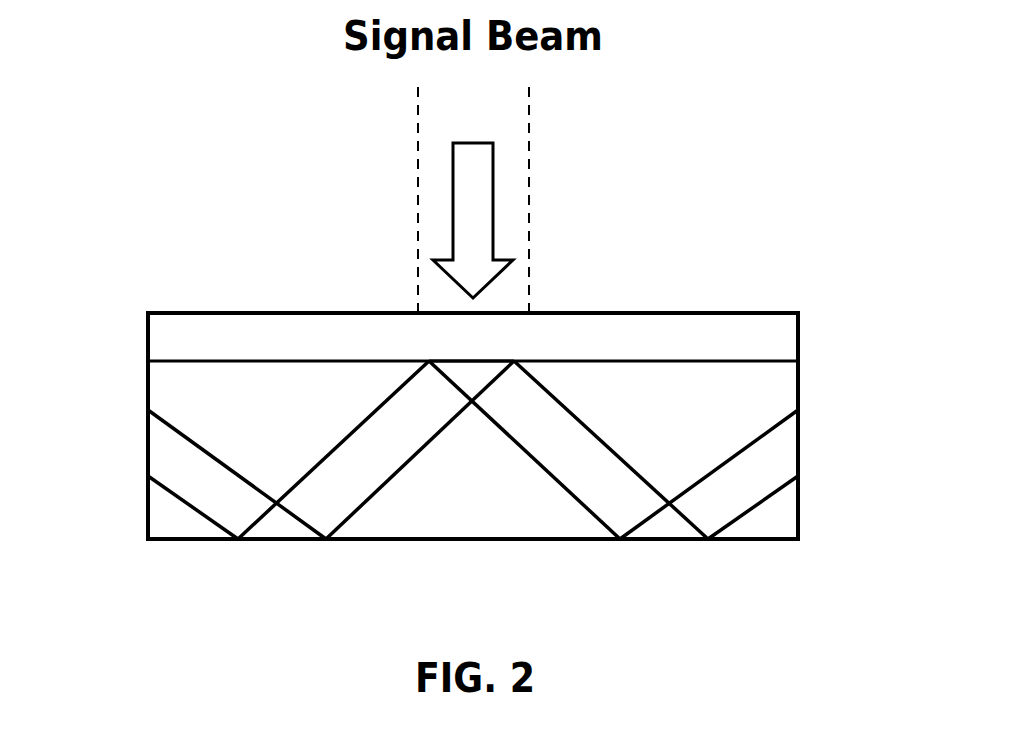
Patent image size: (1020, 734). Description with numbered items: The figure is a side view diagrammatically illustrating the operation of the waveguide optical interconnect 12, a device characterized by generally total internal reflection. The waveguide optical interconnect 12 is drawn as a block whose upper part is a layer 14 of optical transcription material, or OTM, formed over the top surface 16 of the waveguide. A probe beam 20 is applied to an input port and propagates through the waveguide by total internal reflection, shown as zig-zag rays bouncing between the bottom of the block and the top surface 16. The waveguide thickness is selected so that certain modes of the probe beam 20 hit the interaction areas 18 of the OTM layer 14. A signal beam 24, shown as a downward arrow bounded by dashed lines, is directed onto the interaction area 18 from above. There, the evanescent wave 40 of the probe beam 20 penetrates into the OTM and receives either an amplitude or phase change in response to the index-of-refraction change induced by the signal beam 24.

The waveguide optical interconnect 12 is at (798, 395).
The layer of optical transcription material 14 is at (722, 337).
The top surface 16 is at (768, 357).
The interaction areas 18 is at (475, 360).
The probe beam 20 is at (175, 473).
The signal beam 24 is at (492, 126).
The evanescent wave 40 is at (428, 303).